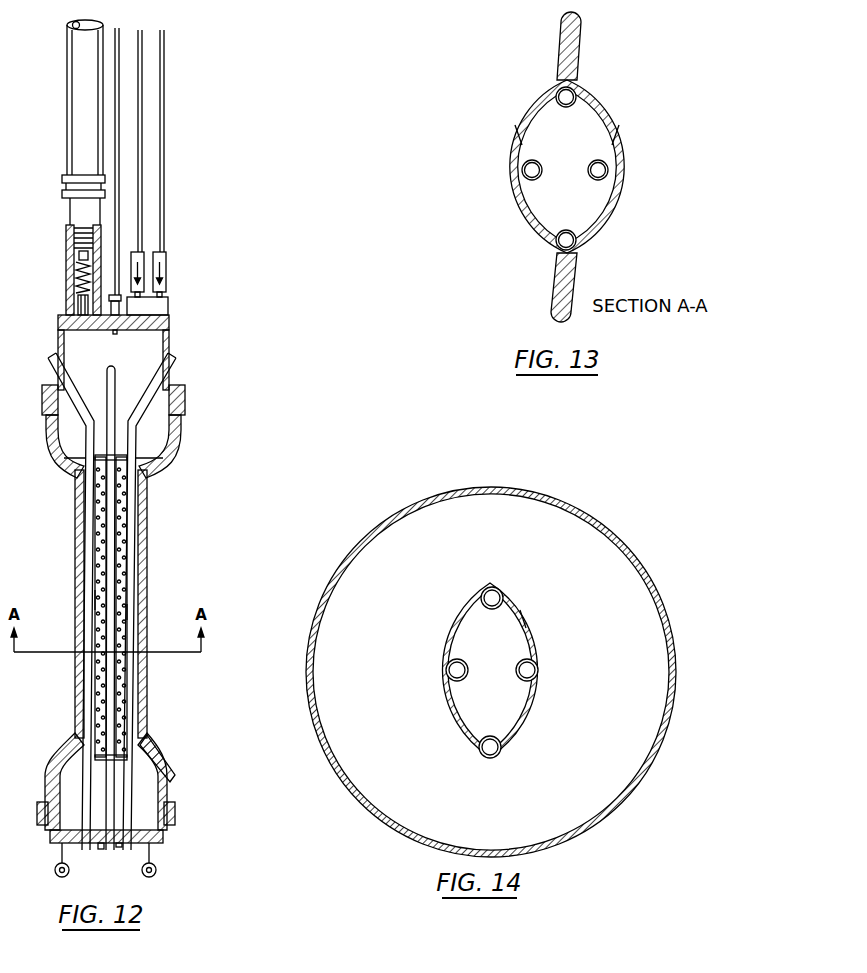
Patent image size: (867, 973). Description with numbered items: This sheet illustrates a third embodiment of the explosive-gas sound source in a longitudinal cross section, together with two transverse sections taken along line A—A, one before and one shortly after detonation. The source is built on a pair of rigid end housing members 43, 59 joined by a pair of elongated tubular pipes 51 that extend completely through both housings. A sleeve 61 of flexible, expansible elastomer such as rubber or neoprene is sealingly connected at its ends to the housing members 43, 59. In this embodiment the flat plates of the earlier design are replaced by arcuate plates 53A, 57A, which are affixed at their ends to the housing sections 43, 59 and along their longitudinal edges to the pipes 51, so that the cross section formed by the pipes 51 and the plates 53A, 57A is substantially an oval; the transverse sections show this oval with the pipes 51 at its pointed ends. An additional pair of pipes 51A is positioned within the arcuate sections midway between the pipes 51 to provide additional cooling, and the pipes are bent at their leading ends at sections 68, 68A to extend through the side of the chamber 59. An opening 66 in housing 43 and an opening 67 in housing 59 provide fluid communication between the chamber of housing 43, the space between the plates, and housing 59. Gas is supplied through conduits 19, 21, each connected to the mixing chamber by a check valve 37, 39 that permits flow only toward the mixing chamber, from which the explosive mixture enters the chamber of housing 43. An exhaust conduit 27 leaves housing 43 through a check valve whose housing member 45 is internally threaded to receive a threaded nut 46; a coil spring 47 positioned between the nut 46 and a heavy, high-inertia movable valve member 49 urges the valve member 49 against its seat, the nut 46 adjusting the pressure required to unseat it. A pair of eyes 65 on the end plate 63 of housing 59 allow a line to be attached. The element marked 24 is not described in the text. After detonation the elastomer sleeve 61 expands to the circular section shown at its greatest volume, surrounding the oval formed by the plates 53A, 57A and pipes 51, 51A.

In FIG. 12, the conduit 19 is at (164, 61).
In FIG. 12, the conduit 21 is at (142, 31).
In FIG. 12, the wire feed rod 24 is at (118, 31).
In FIG. 12, the exhaust conduit 27 is at (70, 112).
In FIG. 12, the check valve 37 is at (166, 266).
In FIG. 12, the check valve 39 is at (140, 258).
In FIG. 12, the end housing member 43 is at (58, 433).
In FIG. 12, the housing member 45 is at (68, 276).
In FIG. 12, the threaded nut 46 is at (79, 257).
In FIG. 12, the coil spring 47 is at (78, 290).
In FIG. 12, the movable valve member 49 is at (78, 308).
In FIG. 12, the tubular pipe 51 is at (106, 554).
In FIG. 13, the tubular pipe 51 is at (575, 95).
In FIG. 14, the tubular pipe 51 is at (496, 591).
In FIG. 12, the additional pipe 51A is at (92, 600).
In FIG. 13, the additional pipe 51A is at (524, 170).
In FIG. 14, the additional pipe 51A is at (449, 670).
In FIG. 13, the arcuate plate 53A is at (516, 130).
In FIG. 14, the arcuate plate 53A is at (474, 601).
In FIG. 13, the arcuate plate 57A is at (614, 130).
In FIG. 14, the arcuate plate 57A is at (525, 617).
In FIG. 12, the end housing member 59 is at (170, 350).
In FIG. 12, the sleeve 61 is at (168, 787).
In FIG. 13, the sleeve 61 is at (542, 92).
In FIG. 14, the sleeve 61 is at (638, 759).
In FIG. 12, the end plate 63 is at (142, 843).
In FIG. 12, the eye 65 is at (55, 868).
In FIG. 12, the opening 66 is at (138, 462).
In FIG. 13, the opening 66 is at (548, 200).
In FIG. 12, the opening 67 is at (118, 760).
In FIG. 12, the bent section 68 is at (116, 373).
In FIG. 12, the bent section 68A is at (52, 360).